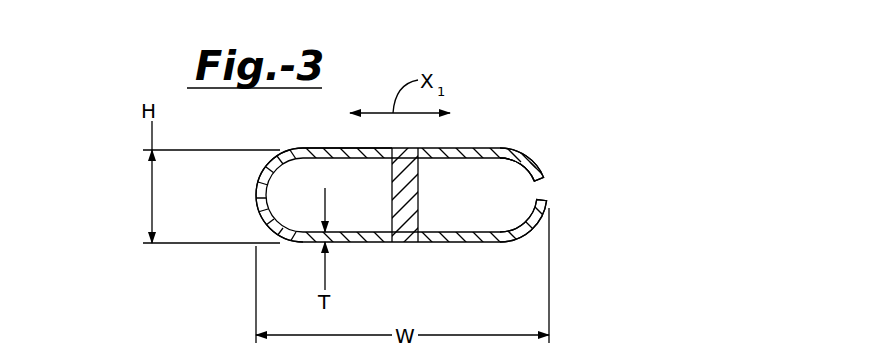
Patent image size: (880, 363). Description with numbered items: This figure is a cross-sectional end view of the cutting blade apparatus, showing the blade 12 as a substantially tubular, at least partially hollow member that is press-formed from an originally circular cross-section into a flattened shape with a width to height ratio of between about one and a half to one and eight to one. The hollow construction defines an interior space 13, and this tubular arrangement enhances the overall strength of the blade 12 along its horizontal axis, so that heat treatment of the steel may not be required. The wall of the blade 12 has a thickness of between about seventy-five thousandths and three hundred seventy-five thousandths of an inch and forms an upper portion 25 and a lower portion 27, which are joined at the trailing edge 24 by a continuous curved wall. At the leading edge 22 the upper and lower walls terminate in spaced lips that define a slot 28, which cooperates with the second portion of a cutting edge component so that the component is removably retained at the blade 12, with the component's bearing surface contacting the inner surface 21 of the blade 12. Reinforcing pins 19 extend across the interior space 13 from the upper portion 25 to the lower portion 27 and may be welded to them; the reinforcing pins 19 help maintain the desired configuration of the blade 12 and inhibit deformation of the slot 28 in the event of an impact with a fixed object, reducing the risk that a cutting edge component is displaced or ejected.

The blade 12 is at (495, 136).
The interior space 13 is at (370, 191).
The reinforcing pins 19 is at (419, 198).
The inner surface 21 is at (523, 168).
The leading edge 22 is at (529, 147).
The trailing edge 24 is at (256, 190).
The upper portion 25 is at (302, 148).
The lower portion 27 is at (505, 243).
The slot 28 is at (542, 191).